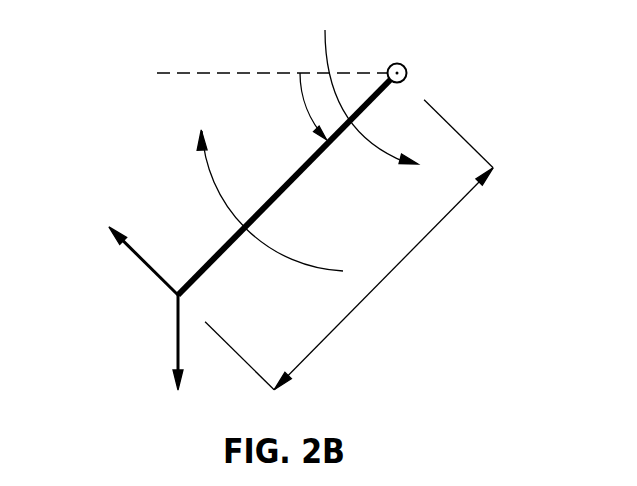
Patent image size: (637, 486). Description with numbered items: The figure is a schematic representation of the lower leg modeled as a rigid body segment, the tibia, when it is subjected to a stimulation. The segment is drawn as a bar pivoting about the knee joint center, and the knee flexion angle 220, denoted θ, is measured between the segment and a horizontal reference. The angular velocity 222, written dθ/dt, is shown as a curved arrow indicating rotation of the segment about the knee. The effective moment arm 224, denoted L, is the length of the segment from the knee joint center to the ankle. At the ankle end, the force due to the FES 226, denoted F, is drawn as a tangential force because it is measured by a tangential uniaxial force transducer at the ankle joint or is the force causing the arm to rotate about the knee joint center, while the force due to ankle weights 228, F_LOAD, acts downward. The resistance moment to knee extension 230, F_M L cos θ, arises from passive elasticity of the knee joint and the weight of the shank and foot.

The knee flexion angle 220 is at (304, 120).
The angular velocity 222 is at (212, 180).
The effective moment arm 224 is at (375, 290).
The force due to the FES 226 is at (147, 267).
The force due to ankle weights 228 is at (175, 358).
The resistance moment to knee extension 230 is at (380, 155).